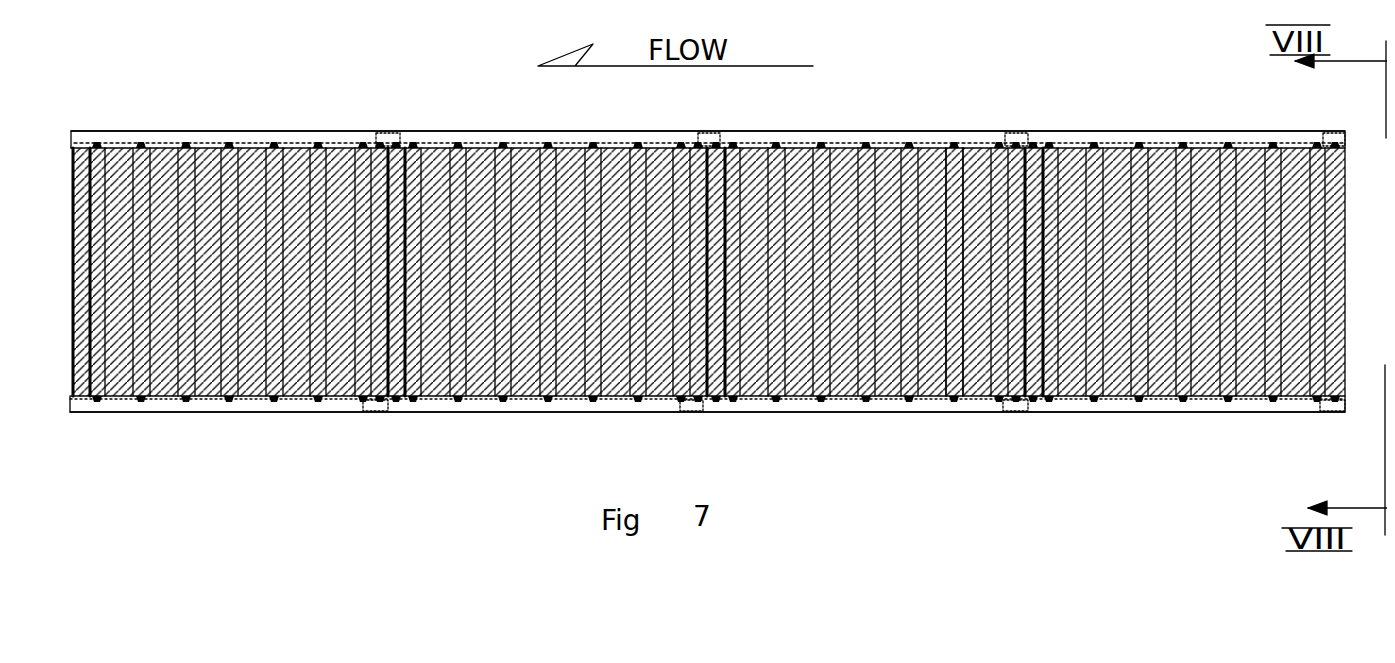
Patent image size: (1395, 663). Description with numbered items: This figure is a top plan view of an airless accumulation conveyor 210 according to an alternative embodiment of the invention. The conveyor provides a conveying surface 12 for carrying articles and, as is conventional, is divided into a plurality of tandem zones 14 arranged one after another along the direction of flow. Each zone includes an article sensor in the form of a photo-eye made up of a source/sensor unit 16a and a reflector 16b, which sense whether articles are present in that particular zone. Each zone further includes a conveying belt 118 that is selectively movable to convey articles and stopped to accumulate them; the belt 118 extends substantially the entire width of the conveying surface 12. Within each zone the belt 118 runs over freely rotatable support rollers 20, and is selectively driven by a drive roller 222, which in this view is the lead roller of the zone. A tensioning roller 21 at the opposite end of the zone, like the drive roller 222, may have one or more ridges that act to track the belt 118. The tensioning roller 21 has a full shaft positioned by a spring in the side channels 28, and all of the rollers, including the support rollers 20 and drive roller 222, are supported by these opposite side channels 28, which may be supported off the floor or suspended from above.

The conveying surface 12 is at (1338, 235).
The tandem zones 14 is at (266, 118).
The source/sensor unit 16a is at (368, 398).
The reflector 16b is at (385, 126).
The support rollers 20 is at (275, 388).
The tensioning roller 21 is at (345, 390).
The side channels 28 is at (923, 124).
The conveying belt 118 is at (200, 140).
The airless accumulation conveyor 210 is at (840, 110).
The drive roller 222 is at (60, 370).